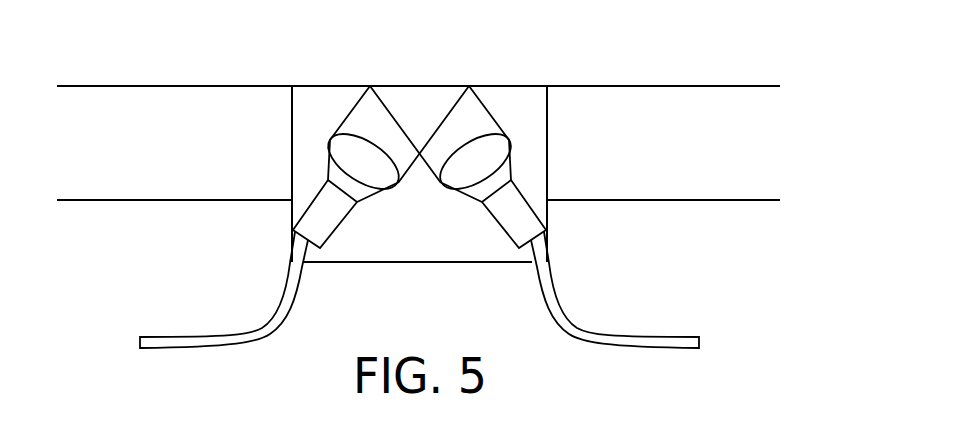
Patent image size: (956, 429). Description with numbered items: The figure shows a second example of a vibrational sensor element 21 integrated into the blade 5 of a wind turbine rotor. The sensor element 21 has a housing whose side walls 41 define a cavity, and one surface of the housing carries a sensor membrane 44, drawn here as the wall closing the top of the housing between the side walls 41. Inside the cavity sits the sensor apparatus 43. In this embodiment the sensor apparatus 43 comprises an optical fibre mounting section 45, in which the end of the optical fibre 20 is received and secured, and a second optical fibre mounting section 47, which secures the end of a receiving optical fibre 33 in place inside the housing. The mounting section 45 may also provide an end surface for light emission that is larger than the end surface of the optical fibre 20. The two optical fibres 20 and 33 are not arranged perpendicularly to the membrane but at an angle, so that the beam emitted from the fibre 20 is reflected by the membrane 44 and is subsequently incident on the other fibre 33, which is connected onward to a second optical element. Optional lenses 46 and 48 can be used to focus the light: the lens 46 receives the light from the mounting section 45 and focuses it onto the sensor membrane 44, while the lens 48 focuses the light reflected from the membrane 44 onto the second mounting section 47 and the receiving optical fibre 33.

The blade 5 is at (729, 95).
The vibrational sensor element 21 is at (284, 70).
The side walls 41 is at (548, 214).
The sensor membrane 44 is at (505, 85).
The sensor apparatus 43 is at (341, 127).
The lens 46 is at (360, 142).
The optical fibre mounting section 45 is at (333, 241).
The optical fibre 20 is at (292, 311).
The lens 48 is at (497, 137).
The second optical fibre mounting section 47 is at (505, 233).
The optical fibre 33 is at (547, 312).